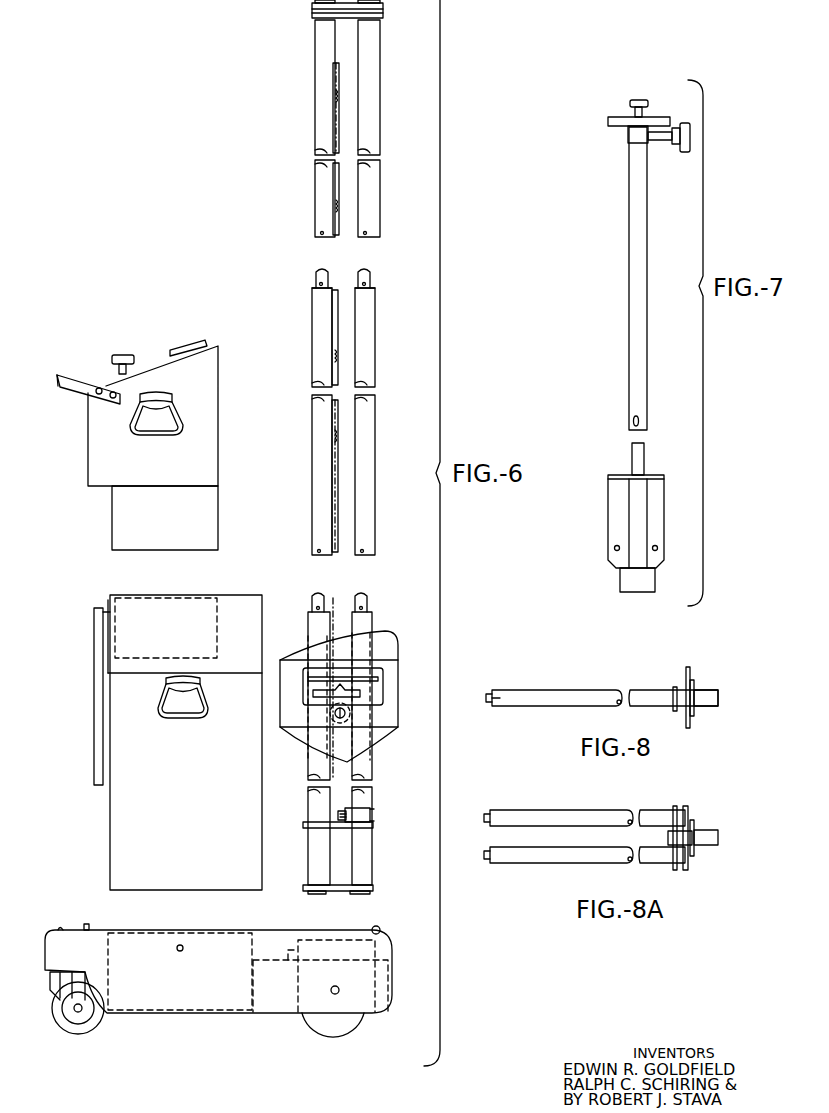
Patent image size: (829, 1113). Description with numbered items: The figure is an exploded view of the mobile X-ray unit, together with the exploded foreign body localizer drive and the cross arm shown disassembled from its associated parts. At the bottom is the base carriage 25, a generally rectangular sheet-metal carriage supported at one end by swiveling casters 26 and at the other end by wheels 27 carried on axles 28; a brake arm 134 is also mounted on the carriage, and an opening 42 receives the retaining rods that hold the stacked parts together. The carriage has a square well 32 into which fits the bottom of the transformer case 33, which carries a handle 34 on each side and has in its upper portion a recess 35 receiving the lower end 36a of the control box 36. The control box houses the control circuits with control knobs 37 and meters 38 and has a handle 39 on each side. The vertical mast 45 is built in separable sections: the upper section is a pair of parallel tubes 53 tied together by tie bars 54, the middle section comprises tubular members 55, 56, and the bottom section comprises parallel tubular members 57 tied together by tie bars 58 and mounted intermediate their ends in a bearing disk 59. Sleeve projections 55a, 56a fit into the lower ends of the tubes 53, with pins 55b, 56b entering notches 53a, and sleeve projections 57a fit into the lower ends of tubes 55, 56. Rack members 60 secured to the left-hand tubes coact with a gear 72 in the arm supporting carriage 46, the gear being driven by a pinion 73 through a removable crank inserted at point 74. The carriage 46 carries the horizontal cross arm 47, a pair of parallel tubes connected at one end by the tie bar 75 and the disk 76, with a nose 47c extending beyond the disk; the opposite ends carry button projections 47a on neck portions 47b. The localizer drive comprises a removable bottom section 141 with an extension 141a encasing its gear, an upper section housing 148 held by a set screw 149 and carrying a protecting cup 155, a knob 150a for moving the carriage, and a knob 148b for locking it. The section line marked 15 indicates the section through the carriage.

In FIG. 6, the tie bars 54 is at (316, 20).
In FIG. 6, the vertical mast 45 is at (376, 38).
In FIG. 6, the parallel tubes 53 is at (368, 112).
In FIG. 6, the rack members 60 is at (335, 178).
In FIG. 6, the notches 53a is at (318, 236).
In FIG. 6, the sleeve projection 55a is at (318, 272).
In FIG. 6, the pin 55b is at (316, 286).
In FIG. 6, the tubular member 55 is at (320, 332).
In FIG. 6, the sleeve projection 56a is at (368, 272).
In FIG. 6, the pin 56b is at (370, 286).
In FIG. 6, the tubular member 56 is at (368, 332).
In FIG. 6, the sleeve projections 57a is at (316, 600).
In FIG. 6, the tubular members 57 is at (313, 805).
In FIG. 6, the arm supporting carriage 46 is at (388, 645).
In FIG. 6, the gear 72 is at (365, 686).
In FIG. 6, the pinion 73 is at (352, 713).
In FIG. 6, the crank insertion point 74 is at (340, 716).
In FIG. 6, the bearing disk 59 is at (374, 823).
In FIG. 6, the tie bars 58 is at (368, 885).
In FIG. 6, the control box 36 is at (96, 455).
In FIG. 6, the lower end of control box 36a is at (112, 542).
In FIG. 6, the handle 39 is at (166, 434).
In FIG. 6, the control knobs 37 is at (120, 355).
In FIG. 6, the meters 38 is at (186, 346).
In FIG. 6, the transformer case 33 is at (118, 798).
In FIG. 6, the recess 35 is at (131, 608).
In FIG. 6, the handle 34 is at (194, 720).
In FIG. 6, the base carriage 25 is at (187, 1015).
In FIG. 6, the square well 32 is at (113, 950).
In FIG. 6, the opening 42 is at (182, 951).
In FIG. 6, the axles 28 is at (338, 993).
In FIG. 6, the arm 134 is at (372, 930).
In FIG. 6, the wheels 27 is at (312, 1022).
In FIG. 6, the swiveling casters 26 is at (86, 1028).
In FIG. 6, the section line 15 is at (18, 928).
In FIG. 7, the upper section housing 148 is at (638, 305).
In FIG. 7, the protecting cup 155 is at (608, 121).
In FIG. 7, the knob 150a is at (638, 100).
In FIG. 7, the knob 148b is at (692, 137).
In FIG. 7, the set screw 149 is at (634, 422).
In FIG. 7, the bottom section 141 is at (617, 530).
In FIG. 7, the extension 141a is at (622, 580).
In FIG. 8, the cross arm 47 is at (568, 692).
In FIG. 8A, the cross arm 47 is at (538, 812).
In FIG. 8, the button projections 47a is at (488, 698).
In FIG. 8, the neck portions 47b is at (498, 694).
In FIG. 8, the tie bar 75 is at (674, 690).
In FIG. 8A, the tie bar 75 is at (674, 810).
In FIG. 8, the disk 76 is at (690, 674).
In FIG. 8A, the disk 76 is at (686, 810).
In FIG. 8, the nose 47c is at (712, 700).
In FIG. 8A, the nose 47c is at (710, 838).